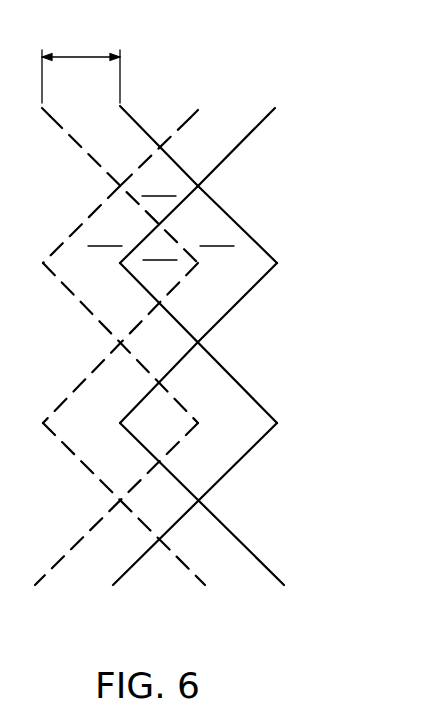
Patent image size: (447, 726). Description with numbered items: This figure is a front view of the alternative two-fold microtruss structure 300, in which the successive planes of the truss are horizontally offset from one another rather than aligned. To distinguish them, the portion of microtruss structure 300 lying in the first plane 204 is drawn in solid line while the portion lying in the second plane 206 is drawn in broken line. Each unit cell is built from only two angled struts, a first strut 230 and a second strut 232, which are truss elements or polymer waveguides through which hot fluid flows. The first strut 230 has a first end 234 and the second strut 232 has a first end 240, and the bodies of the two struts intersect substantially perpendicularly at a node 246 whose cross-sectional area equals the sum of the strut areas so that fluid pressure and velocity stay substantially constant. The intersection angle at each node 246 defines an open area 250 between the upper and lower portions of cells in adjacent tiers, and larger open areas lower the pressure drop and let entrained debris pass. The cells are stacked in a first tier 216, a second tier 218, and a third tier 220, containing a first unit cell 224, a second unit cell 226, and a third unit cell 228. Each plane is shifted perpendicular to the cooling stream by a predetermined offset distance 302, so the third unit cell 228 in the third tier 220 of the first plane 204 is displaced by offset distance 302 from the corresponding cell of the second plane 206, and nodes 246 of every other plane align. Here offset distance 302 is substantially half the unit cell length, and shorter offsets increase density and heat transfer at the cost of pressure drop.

The microtruss structure 300 is at (297, 98).
The offset distance 302 is at (82, 57).
The first plane 204 is at (247, 125).
The second plane 206 is at (88, 120).
The first tier 216 is at (250, 482).
The second tier 218 is at (248, 320).
The third tier 220 is at (258, 192).
The first unit cell 224 is at (237, 507).
The second unit cell 226 is at (237, 347).
The third unit cell 228 is at (235, 198).
The first strut 230 is at (75, 145).
The second strut 232 is at (235, 148).
The first end 234 is at (42, 109).
The first end 240 is at (276, 111).
The node 246 is at (116, 186).
The open area 250 is at (161, 218).